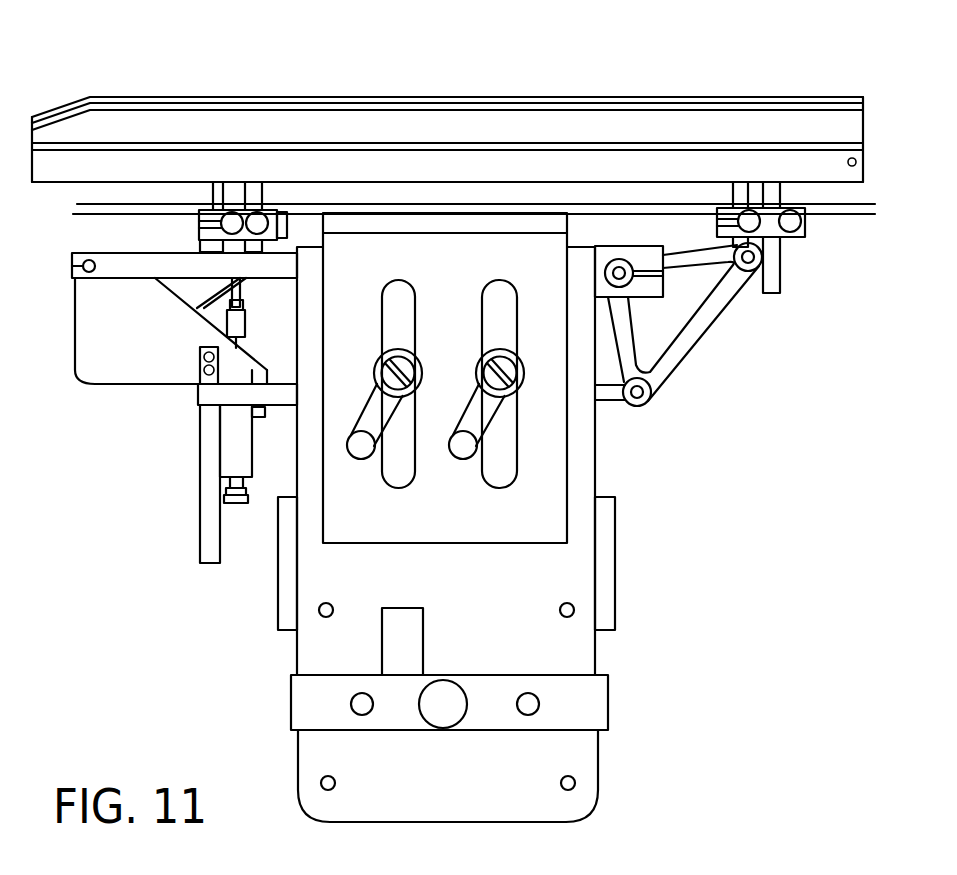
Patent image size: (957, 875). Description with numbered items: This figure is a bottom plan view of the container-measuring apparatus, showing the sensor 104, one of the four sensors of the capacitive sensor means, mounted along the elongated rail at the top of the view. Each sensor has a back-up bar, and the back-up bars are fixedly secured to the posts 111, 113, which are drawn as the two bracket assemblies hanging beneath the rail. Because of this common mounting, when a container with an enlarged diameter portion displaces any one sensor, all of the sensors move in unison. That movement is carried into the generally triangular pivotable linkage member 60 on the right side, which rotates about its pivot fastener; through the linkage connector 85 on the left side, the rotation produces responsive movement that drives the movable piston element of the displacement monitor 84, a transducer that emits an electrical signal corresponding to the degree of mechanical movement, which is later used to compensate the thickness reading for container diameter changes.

The sensor 104 is at (816, 87).
The post 113 is at (232, 212).
The post 111 is at (749, 210).
The linkage connector 85 is at (130, 262).
The displacement monitor 84 is at (189, 447).
The linkage member 60 is at (706, 353).